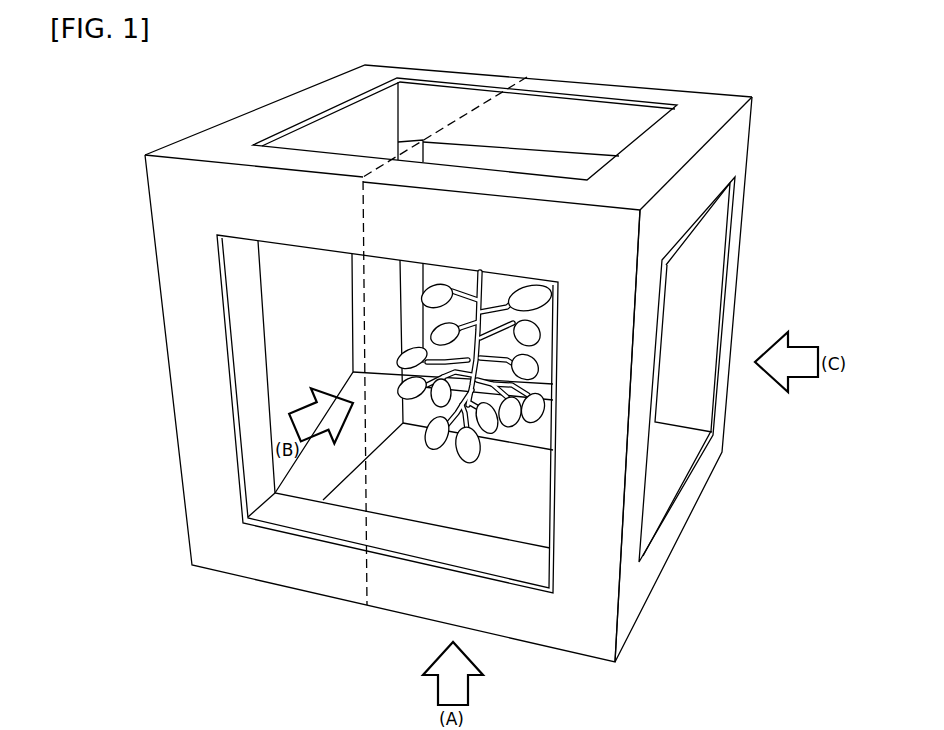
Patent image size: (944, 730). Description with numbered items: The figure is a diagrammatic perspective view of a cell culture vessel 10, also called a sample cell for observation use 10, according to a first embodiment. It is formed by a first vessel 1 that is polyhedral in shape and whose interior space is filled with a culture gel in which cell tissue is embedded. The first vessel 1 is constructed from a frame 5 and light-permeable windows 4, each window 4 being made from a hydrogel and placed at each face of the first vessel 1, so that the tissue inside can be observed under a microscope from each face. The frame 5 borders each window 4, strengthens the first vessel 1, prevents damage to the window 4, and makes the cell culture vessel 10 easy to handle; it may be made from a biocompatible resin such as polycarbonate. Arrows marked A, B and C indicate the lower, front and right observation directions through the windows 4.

The cell culture vessel 10 is at (741, 60).
The first vessel 1 is at (796, 143).
The frame 5 is at (723, 160).
The light-permeable window 4 is at (503, 157).